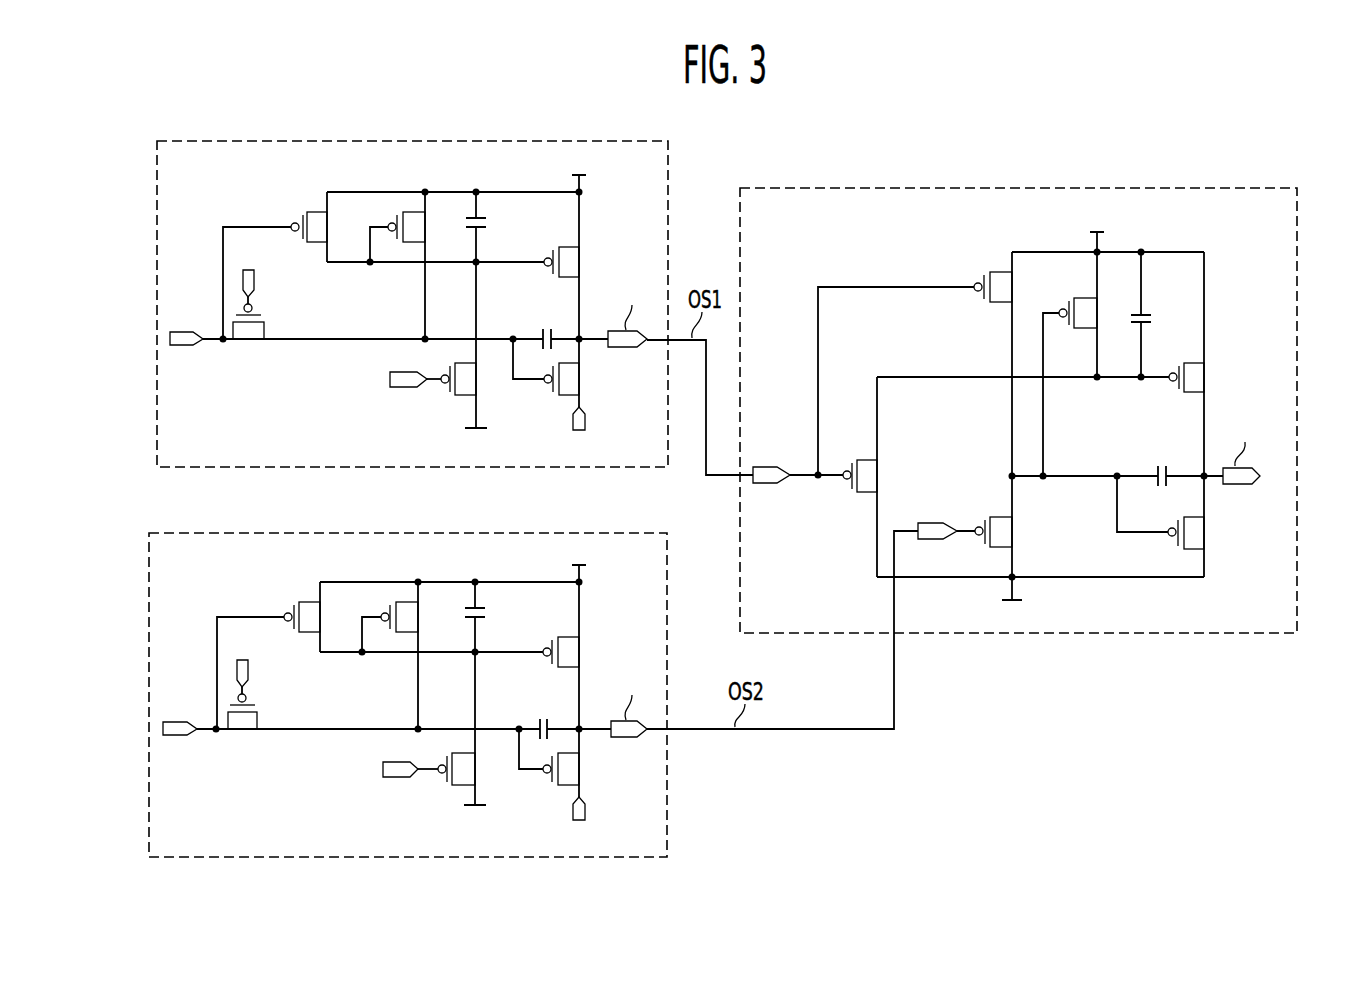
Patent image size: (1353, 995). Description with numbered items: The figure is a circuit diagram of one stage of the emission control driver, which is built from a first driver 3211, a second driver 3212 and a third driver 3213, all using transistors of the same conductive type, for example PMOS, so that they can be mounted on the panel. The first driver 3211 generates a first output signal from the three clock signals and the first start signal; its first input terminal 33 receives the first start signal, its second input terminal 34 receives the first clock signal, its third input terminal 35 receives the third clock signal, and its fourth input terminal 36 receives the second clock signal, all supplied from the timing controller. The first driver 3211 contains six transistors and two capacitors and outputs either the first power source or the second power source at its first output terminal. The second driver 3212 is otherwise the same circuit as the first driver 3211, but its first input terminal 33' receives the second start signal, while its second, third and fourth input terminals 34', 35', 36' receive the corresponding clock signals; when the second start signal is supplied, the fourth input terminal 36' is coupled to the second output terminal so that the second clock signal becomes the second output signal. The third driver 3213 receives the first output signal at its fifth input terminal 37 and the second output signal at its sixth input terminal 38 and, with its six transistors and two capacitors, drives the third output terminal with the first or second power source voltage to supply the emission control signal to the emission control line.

The first driver 3211 is at (514, 140).
The second driver 3212 is at (514, 532).
The third driver 3213 is at (1137, 188).
The first input terminal 33 is at (188, 354).
The second input terminal 34 is at (267, 272).
The third input terminal 35 is at (381, 406).
The fourth input terminal 36 is at (597, 435).
The fifth input terminal 37 is at (766, 487).
The sixth input terminal 38 is at (936, 520).
The first input terminal of the second driver 33' is at (181, 744).
The first clock input terminal of second signal generator 34' is at (264, 662).
The third clock input terminal of second signal generator 35' is at (376, 796).
The fourth input terminal of the second driver 36' is at (599, 825).